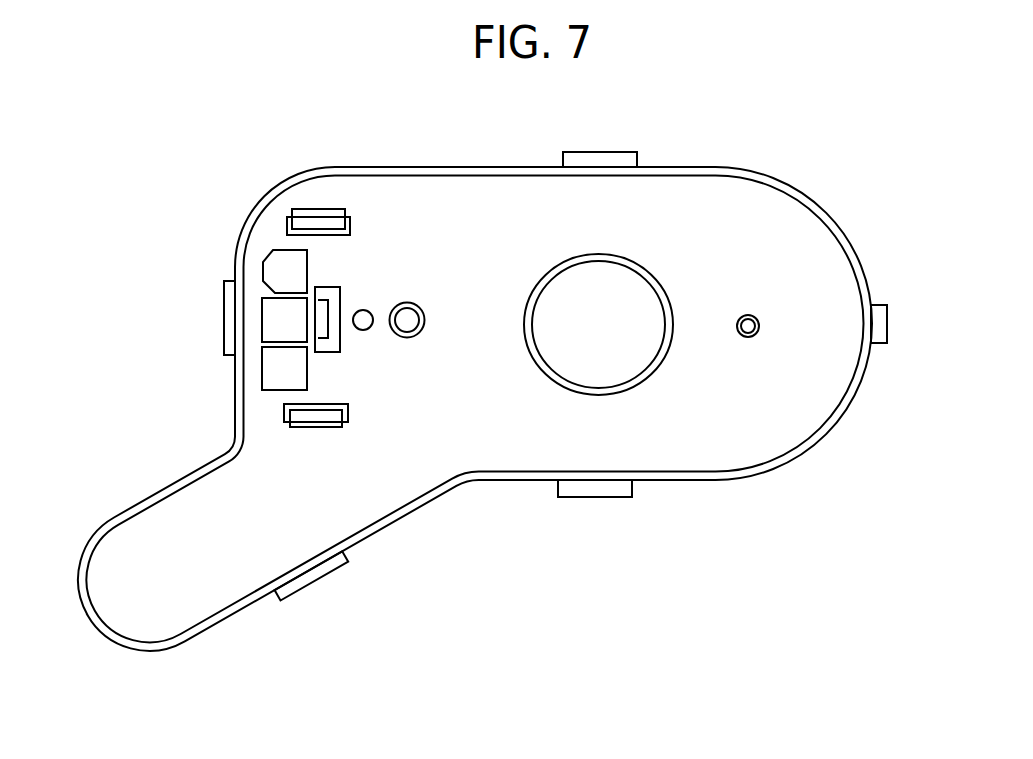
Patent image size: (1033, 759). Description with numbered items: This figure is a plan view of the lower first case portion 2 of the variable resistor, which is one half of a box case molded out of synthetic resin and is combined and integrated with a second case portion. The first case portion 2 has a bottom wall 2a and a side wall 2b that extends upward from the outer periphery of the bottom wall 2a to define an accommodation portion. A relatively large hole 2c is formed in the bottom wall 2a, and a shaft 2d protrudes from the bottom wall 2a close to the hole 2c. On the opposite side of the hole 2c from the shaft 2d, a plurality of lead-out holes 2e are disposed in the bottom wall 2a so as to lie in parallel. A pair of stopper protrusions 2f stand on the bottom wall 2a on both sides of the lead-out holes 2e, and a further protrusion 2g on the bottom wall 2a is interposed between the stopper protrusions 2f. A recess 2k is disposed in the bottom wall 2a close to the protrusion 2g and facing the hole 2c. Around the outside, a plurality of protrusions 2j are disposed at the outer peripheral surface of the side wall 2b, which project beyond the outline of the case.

The first case portion 2 is at (497, 406).
The bottom wall 2a is at (815, 238).
The side wall 2b is at (842, 418).
The hole 2c is at (627, 358).
The shaft 2d is at (750, 337).
The lead-out holes 2e is at (273, 318).
The stopper protrusions 2f is at (322, 220).
The protrusion 2g is at (363, 310).
The protrusions 2j is at (600, 158).
The recess 2k is at (407, 303).